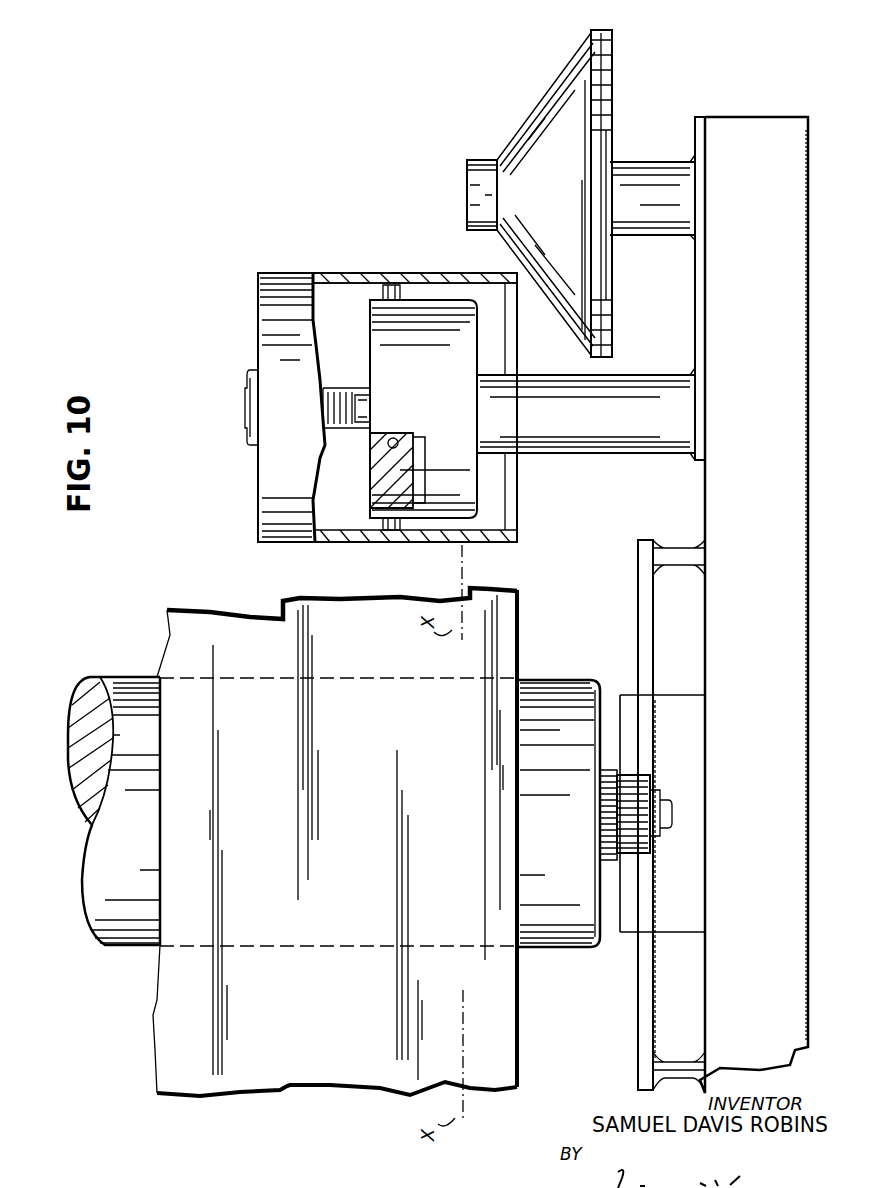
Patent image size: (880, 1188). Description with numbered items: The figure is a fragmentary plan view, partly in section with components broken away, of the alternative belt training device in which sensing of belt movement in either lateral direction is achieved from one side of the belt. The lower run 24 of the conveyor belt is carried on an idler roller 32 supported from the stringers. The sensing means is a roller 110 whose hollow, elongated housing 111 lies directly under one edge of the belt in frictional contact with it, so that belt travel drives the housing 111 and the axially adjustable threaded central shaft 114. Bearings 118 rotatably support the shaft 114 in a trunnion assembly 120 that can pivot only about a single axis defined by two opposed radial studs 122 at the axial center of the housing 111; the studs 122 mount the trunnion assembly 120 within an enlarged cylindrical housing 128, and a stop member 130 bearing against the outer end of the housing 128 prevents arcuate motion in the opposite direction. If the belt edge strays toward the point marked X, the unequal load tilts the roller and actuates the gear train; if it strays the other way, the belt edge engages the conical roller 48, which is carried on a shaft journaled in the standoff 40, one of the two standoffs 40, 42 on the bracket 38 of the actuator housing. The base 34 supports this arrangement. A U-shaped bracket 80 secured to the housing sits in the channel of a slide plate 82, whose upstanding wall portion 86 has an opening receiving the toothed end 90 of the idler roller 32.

The lower run 24 is at (196, 626).
The idler roller 32 is at (130, 697).
The base 34 is at (730, 110).
The bracket 38 is at (695, 145).
The standoff 40 is at (635, 178).
The standoff 42 is at (605, 453).
The conical roller 48 is at (505, 150).
The U-shaped bracket 80 is at (636, 578).
The slide plate 82 is at (686, 706).
The upstanding wall portion 86 is at (622, 700).
The toothed end 90 is at (650, 788).
The roller 110 is at (238, 296).
The housing 111 is at (336, 273).
The threaded central shaft 114 is at (355, 388).
The bearings 118 is at (426, 455).
The trunnion assembly 120 is at (380, 478).
The radial studs 122 is at (392, 284).
The cylindrical housing 128 is at (428, 312).
The stop member 130 is at (372, 410).